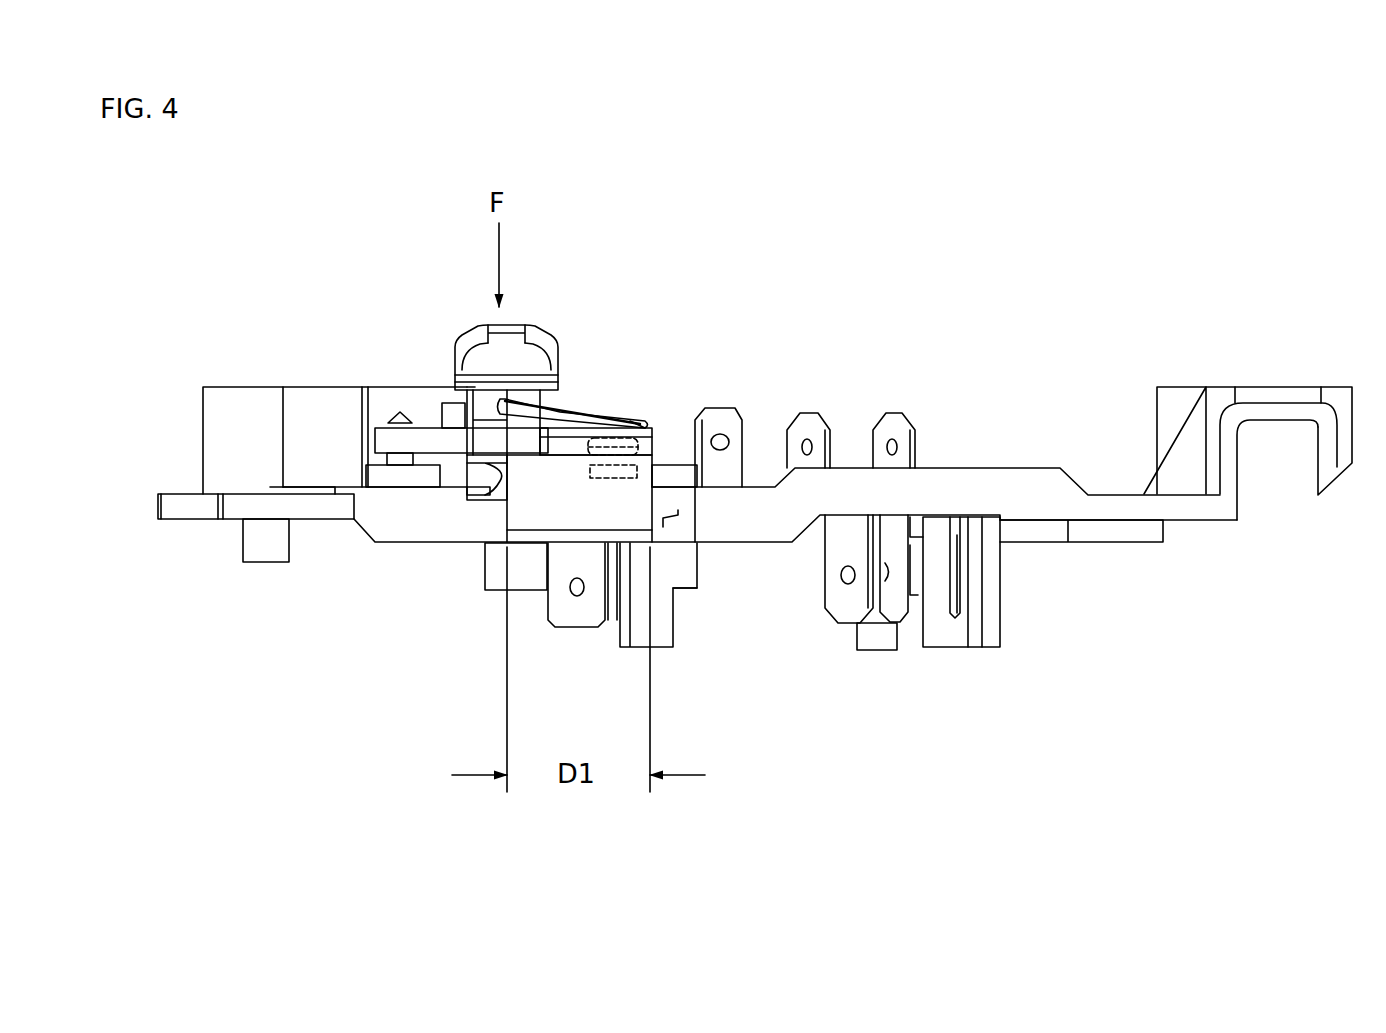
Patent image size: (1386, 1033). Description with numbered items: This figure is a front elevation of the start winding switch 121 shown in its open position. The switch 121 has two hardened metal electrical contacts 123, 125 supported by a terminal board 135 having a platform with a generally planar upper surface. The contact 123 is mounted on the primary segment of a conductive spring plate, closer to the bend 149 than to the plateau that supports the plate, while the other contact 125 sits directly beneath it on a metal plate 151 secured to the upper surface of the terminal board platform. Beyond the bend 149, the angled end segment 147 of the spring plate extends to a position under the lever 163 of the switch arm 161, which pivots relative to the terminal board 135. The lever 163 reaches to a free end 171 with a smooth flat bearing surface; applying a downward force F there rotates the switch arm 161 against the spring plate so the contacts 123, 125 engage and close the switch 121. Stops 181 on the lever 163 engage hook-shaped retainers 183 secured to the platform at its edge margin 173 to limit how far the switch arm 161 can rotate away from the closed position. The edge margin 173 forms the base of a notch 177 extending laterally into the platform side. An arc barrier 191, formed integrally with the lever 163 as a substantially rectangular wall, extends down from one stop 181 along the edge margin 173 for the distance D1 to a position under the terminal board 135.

The start winding switch 121 is at (1150, 228).
The electrical contact 123 is at (650, 450).
The electrical contact 125 is at (610, 472).
The terminal board 135 is at (1290, 378).
The end segment 147 is at (583, 416).
The bend 149 is at (645, 423).
The metal plate 151 is at (680, 483).
The switch arm 161 is at (445, 323).
The lever 163 is at (565, 355).
The free end 171 is at (510, 333).
The edge margin 173 is at (663, 488).
The notch 177 is at (663, 523).
The stop 181 is at (390, 440).
The retainer 183 is at (440, 410).
The arc barrier 191 is at (553, 513).